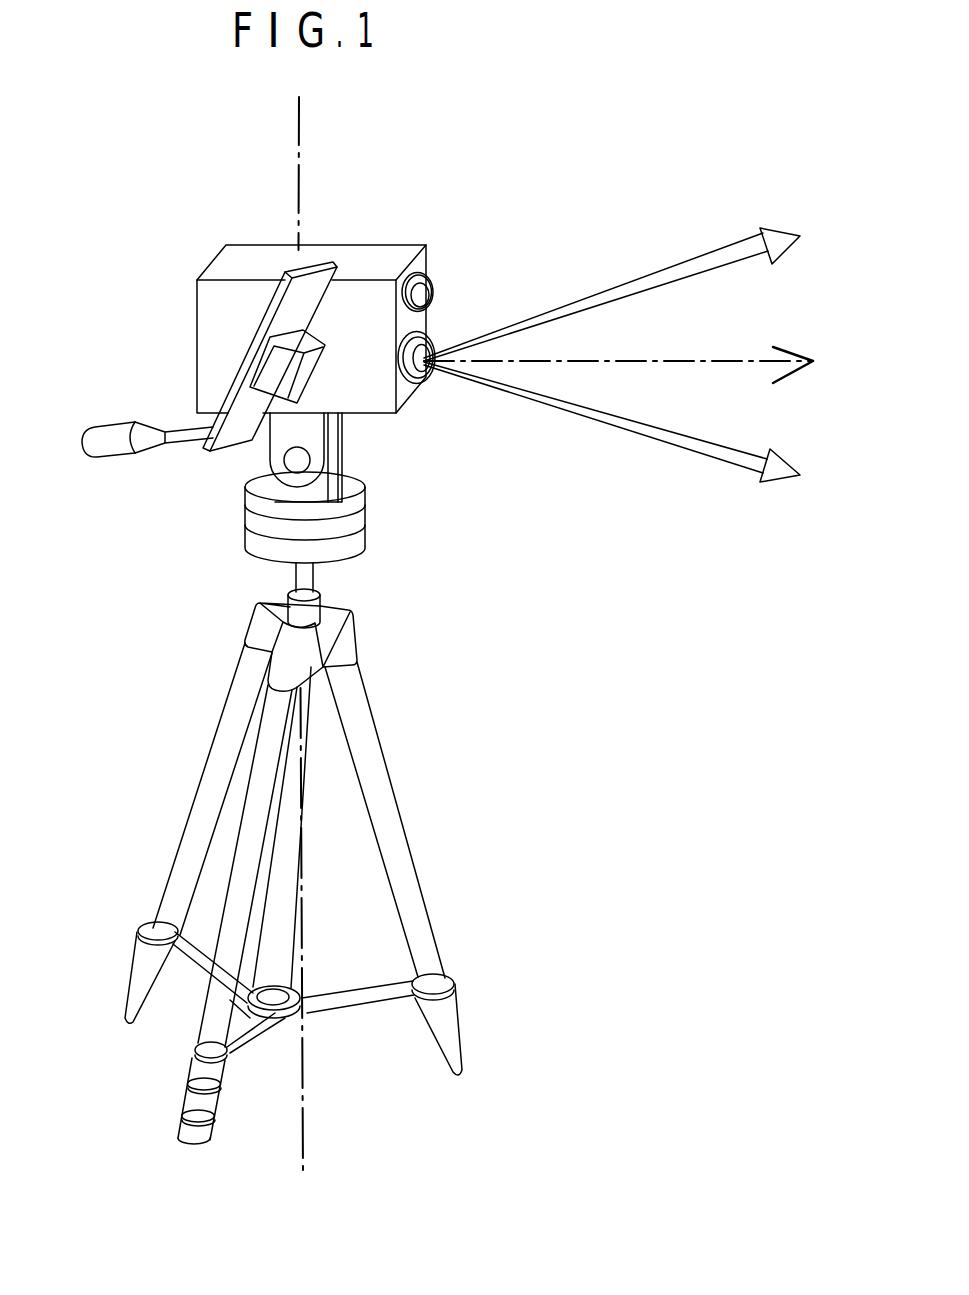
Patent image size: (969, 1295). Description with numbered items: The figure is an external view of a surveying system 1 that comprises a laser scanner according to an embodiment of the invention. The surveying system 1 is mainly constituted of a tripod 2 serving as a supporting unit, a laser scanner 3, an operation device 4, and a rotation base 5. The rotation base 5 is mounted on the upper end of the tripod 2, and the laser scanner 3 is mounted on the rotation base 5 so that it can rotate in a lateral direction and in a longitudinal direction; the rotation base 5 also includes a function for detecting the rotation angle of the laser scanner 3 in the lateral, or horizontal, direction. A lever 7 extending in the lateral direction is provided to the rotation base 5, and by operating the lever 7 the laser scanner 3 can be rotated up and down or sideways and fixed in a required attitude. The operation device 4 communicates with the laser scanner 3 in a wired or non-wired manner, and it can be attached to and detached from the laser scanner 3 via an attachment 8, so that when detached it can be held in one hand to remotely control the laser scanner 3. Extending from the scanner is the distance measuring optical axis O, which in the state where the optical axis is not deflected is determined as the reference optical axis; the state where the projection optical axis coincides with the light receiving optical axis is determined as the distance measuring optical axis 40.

The surveying system 1 is at (469, 161).
The tripod 2 is at (203, 770).
The laser scanner 3 is at (251, 249).
The operation device 4 is at (322, 258).
The rotation base 5 is at (222, 542).
The lever 7 is at (140, 418).
The attachment 8 is at (313, 378).
The distance measuring optical axis 40 is at (650, 278).
The distance measuring optical axis O is at (594, 360).